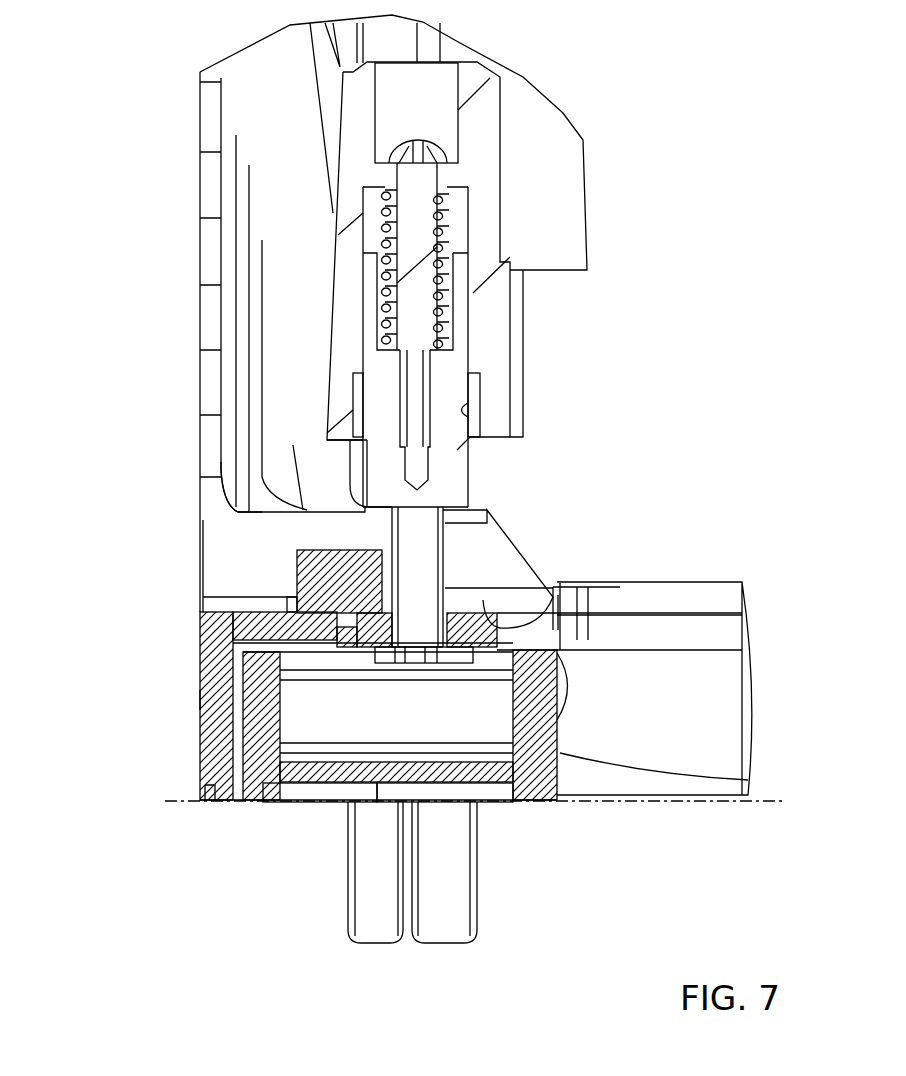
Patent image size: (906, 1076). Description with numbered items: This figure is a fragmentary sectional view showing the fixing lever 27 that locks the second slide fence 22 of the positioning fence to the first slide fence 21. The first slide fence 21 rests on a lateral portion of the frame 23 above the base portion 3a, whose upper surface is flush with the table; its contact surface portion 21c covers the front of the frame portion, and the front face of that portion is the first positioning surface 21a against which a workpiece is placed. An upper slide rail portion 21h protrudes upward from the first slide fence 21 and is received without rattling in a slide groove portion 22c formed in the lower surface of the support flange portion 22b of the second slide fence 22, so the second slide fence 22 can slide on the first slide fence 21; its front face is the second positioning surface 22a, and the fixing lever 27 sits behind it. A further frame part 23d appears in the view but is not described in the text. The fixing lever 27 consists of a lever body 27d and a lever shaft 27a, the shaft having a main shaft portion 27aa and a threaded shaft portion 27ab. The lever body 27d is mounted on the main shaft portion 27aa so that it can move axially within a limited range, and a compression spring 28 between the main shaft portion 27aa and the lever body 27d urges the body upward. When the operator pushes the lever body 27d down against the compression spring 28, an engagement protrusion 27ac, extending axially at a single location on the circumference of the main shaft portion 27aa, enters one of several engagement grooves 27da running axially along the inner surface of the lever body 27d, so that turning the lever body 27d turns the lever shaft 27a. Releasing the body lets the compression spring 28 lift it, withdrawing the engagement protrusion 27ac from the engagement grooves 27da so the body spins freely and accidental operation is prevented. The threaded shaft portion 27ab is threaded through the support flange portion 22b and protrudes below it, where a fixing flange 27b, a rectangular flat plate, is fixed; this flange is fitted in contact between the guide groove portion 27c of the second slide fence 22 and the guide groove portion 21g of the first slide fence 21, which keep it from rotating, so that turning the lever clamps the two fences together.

The base portion 3a is at (165, 801).
The first slide fence 21 is at (200, 650).
The first positioning surface 21a is at (200, 698).
The contact surface portion 21c is at (213, 785).
The guide groove portion 21g is at (295, 594).
The upper slide rail portion 21h is at (300, 552).
The second slide fence 22 is at (272, 352).
The second positioning surface 22a is at (218, 275).
The support flange portion 22b is at (300, 503).
The slide groove portion 22c is at (388, 530).
The frame 23 is at (557, 735).
The terminal pins 23d is at (358, 878).
The fixing lever 27 is at (512, 420).
The lever shaft 27a is at (470, 473).
The main shaft portion 27aa is at (457, 392).
The threaded shaft portion 27ab is at (427, 570).
The engagement protrusion 27ac is at (345, 460).
The fixing flange 27b is at (462, 627).
The guide groove portion 27c is at (560, 590).
The lever body 27d is at (497, 302).
The engagement grooves 27da is at (377, 370).
The compression spring 28 is at (447, 208).